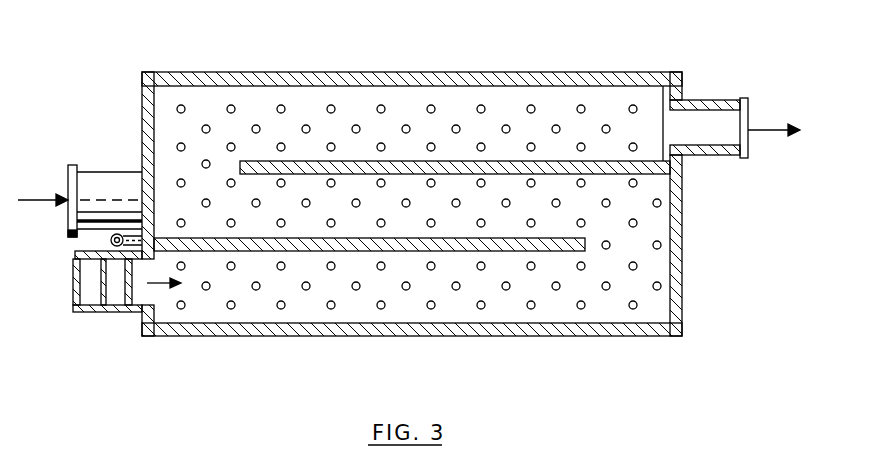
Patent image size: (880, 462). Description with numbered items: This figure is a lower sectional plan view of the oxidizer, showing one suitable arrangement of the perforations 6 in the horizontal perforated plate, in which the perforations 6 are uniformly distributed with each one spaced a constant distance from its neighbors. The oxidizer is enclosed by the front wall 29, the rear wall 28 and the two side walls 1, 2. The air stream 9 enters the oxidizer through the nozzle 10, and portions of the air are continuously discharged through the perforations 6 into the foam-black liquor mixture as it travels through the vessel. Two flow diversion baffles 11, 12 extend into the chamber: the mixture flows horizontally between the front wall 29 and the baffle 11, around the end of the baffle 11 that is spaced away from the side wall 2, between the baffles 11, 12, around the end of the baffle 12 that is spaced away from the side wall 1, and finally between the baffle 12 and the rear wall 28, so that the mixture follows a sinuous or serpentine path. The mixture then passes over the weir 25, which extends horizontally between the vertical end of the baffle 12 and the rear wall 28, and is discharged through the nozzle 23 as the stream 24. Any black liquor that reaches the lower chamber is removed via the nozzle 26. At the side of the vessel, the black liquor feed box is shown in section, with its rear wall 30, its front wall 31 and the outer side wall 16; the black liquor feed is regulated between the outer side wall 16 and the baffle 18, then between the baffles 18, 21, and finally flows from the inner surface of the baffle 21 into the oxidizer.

The side wall 1 is at (142, 104).
The side wall 2 is at (682, 238).
The perforations 6 is at (260, 129).
The air stream 9 is at (42, 200).
The nozzle 10 is at (100, 172).
The flow diversion baffle 11 is at (448, 251).
The flow diversion baffle 12 is at (390, 174).
The outer side wall 16 is at (75, 287).
The baffle 18 is at (103, 305).
The baffle 21 is at (128, 305).
The nozzle 23 is at (700, 100).
The stream 24 is at (770, 130).
The weir 25 is at (680, 156).
The nozzle 26 is at (110, 240).
The rear wall 28 is at (400, 72).
The front wall 29 is at (395, 336).
The rear wall 30 is at (75, 254).
The front wall 31 is at (112, 312).